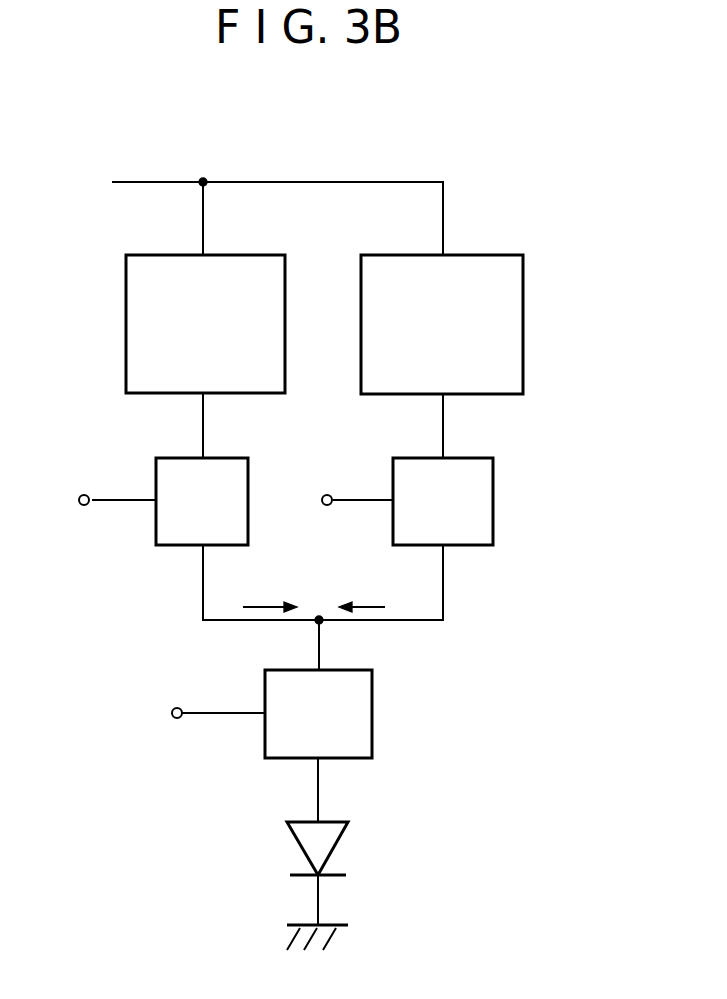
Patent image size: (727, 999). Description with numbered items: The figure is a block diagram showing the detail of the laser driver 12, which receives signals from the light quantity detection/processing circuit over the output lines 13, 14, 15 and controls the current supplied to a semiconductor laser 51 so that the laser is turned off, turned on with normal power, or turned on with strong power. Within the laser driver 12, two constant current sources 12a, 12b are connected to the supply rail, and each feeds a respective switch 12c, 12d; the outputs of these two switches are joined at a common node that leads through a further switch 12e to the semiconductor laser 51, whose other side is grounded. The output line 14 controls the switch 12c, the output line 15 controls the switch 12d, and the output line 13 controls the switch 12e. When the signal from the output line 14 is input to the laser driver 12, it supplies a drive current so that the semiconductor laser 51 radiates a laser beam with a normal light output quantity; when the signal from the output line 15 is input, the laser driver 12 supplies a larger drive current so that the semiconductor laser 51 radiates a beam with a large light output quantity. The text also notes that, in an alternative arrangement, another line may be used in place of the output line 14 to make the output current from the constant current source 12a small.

The laser driver 12 is at (471, 155).
The constant current source 12a is at (126, 275).
The constant current source 12b is at (523, 298).
The switch 12c is at (243, 478).
The switch 12d is at (493, 476).
The switch 12e is at (372, 707).
The output line 13 is at (172, 708).
The output line 14 is at (81, 506).
The output line 15 is at (325, 506).
The semiconductor laser 51 is at (340, 843).